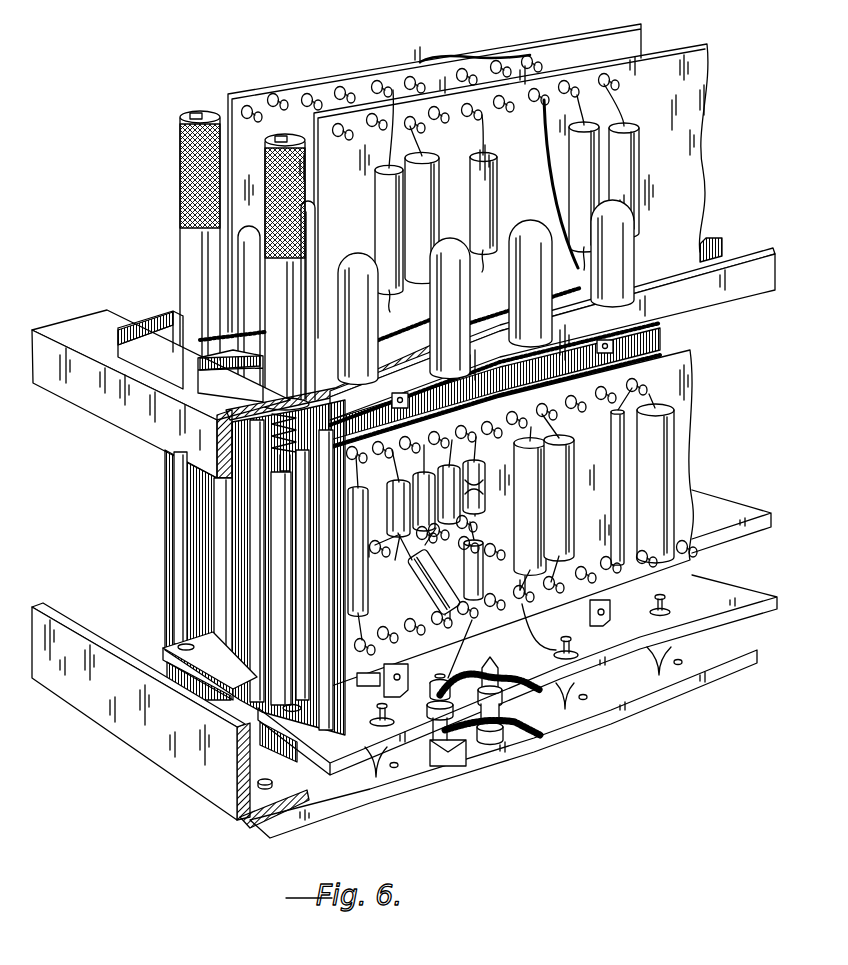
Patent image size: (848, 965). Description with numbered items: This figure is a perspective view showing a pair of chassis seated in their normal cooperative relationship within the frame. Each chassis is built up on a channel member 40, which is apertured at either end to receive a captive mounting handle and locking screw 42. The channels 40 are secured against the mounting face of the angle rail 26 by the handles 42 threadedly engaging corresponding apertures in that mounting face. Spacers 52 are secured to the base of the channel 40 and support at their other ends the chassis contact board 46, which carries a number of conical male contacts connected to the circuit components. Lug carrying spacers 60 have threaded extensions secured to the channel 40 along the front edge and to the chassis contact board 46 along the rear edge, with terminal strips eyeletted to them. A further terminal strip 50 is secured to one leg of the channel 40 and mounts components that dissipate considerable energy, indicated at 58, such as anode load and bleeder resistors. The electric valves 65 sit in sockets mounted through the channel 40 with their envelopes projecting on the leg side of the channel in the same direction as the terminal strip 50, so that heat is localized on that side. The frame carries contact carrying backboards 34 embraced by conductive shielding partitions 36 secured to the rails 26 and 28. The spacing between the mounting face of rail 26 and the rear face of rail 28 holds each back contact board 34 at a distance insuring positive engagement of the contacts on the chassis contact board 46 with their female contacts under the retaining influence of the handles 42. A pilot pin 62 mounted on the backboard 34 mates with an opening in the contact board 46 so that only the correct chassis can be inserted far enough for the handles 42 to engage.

The angle rail 26 is at (60, 325).
The angle rail 28 is at (117, 725).
The contact carrying backboard 34 is at (611, 710).
The shielding partition 36 is at (660, 336).
The channel member 40 is at (722, 243).
The captive mounting handle and locking screw 42 is at (181, 116).
The chassis contact board 46 is at (708, 494).
The terminal strip 50 is at (493, 52).
The spacer 52 is at (188, 650).
The high dissipation components 58 is at (470, 200).
The lug carrying spacer 60 is at (600, 341).
The pilot pin 62 is at (495, 745).
The electric valve 65 is at (353, 253).